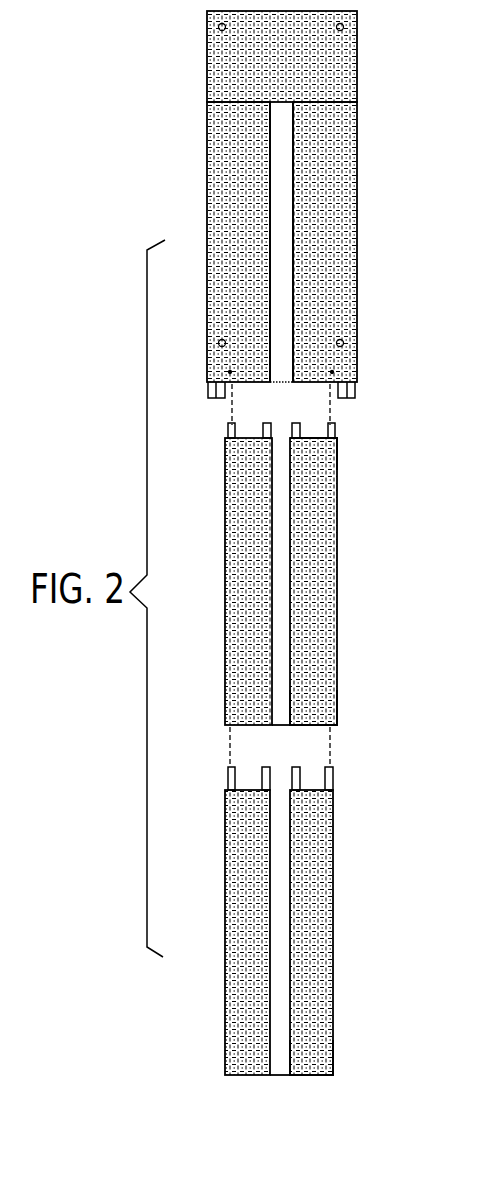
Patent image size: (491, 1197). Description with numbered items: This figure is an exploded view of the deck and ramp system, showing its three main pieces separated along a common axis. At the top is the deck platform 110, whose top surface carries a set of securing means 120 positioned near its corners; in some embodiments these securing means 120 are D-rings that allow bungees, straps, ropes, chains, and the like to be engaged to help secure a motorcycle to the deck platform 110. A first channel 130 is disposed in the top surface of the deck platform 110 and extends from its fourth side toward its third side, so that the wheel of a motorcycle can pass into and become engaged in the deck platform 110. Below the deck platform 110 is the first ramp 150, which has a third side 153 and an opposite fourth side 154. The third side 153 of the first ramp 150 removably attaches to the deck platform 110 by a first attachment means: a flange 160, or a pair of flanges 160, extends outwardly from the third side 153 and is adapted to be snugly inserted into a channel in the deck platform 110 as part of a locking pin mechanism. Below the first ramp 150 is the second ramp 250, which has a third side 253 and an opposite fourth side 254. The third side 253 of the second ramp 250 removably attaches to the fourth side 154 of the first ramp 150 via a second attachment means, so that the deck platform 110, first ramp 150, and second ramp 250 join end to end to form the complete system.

The deck platform 110 is at (207, 117).
The securing means 120 is at (338, 27).
The first channel 130 is at (280, 140).
The first ramp 150 is at (336, 526).
The third side of the first ramp 153 is at (329, 441).
The fourth side of the first ramp 154 is at (312, 724).
The flange 160 is at (265, 436).
The second ramp 250 is at (335, 952).
The third side of the second ramp 253 is at (278, 790).
The fourth side of the second ramp 254 is at (310, 1074).